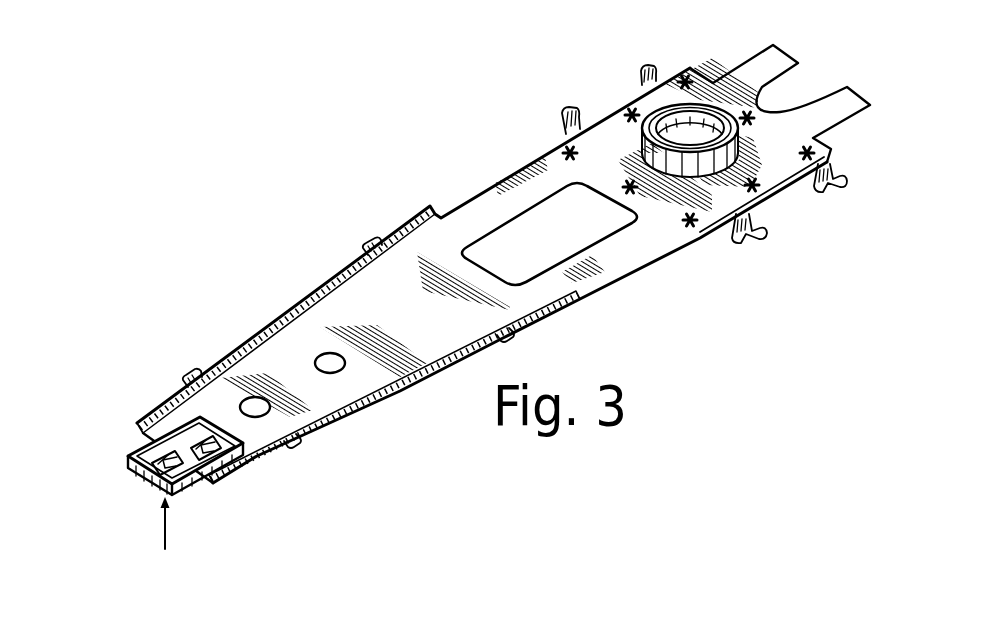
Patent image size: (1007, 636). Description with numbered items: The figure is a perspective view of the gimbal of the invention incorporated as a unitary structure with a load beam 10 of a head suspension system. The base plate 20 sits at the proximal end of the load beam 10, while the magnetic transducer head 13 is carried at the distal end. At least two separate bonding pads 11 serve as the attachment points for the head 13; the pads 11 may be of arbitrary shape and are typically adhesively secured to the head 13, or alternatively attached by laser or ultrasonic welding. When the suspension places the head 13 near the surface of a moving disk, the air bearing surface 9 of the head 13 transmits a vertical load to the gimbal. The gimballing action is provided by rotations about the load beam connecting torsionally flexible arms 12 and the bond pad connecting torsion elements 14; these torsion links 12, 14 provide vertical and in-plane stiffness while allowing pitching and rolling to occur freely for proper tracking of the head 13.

The air bearing surface 9 is at (163, 540).
The load beam 10 is at (426, 334).
The bonding pads 11 is at (127, 460).
The torsionally flexible arms 12 is at (140, 446).
The magnetic transducer head 13 is at (150, 480).
The torsion elements 14 is at (130, 452).
The base plate 20 is at (714, 110).